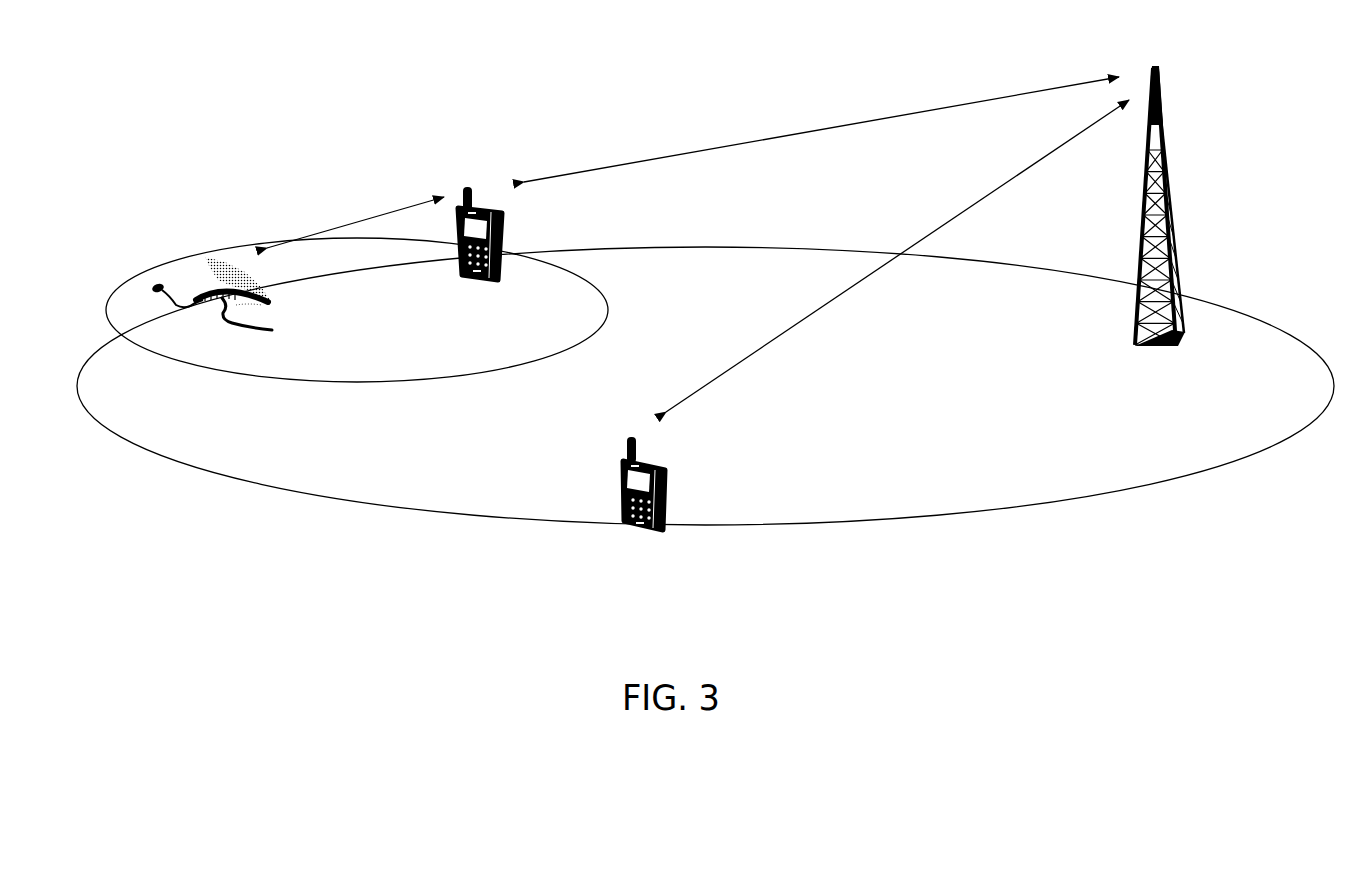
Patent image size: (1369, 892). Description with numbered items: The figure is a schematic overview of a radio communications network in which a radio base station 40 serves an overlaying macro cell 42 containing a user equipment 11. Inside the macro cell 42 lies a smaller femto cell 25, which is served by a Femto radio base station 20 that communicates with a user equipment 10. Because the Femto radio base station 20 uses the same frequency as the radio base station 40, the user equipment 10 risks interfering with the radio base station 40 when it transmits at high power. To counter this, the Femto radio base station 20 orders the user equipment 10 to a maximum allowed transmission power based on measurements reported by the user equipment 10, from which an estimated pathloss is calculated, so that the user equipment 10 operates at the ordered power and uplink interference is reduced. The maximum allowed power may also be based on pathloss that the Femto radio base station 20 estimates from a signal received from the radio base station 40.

The user equipment 10 is at (473, 200).
The user equipment 11 is at (665, 488).
The Femto radio base station 20 is at (207, 262).
The femto cell 25 is at (400, 337).
The radio base station 40 is at (1165, 168).
The macro cell 42 is at (976, 394).